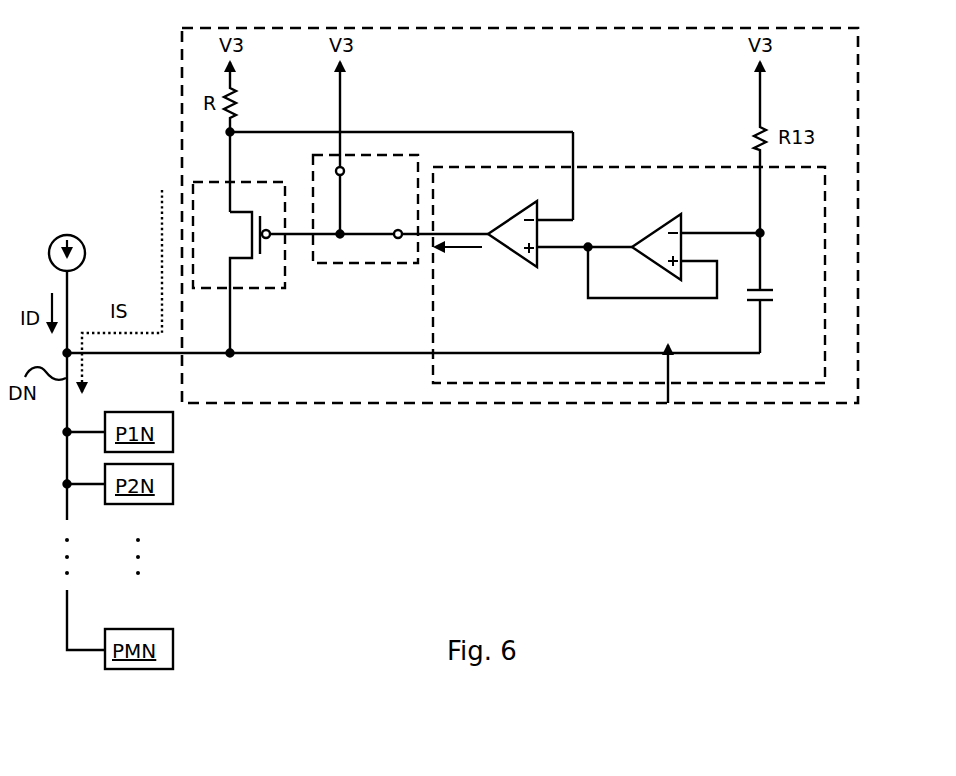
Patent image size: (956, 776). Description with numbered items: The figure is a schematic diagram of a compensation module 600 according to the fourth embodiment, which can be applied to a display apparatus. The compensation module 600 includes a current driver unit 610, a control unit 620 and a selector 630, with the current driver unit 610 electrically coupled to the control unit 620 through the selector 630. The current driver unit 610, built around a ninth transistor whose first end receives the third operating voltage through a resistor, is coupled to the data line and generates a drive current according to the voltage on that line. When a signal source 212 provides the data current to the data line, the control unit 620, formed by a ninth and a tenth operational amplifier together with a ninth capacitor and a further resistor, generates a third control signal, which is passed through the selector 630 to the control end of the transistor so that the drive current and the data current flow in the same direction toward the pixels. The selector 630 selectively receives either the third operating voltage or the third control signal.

The compensation module 600 is at (158, 91).
The signal source 212 is at (70, 239).
The current driver unit 610 is at (277, 290).
The control unit 620 is at (622, 384).
The selector 630 is at (373, 266).